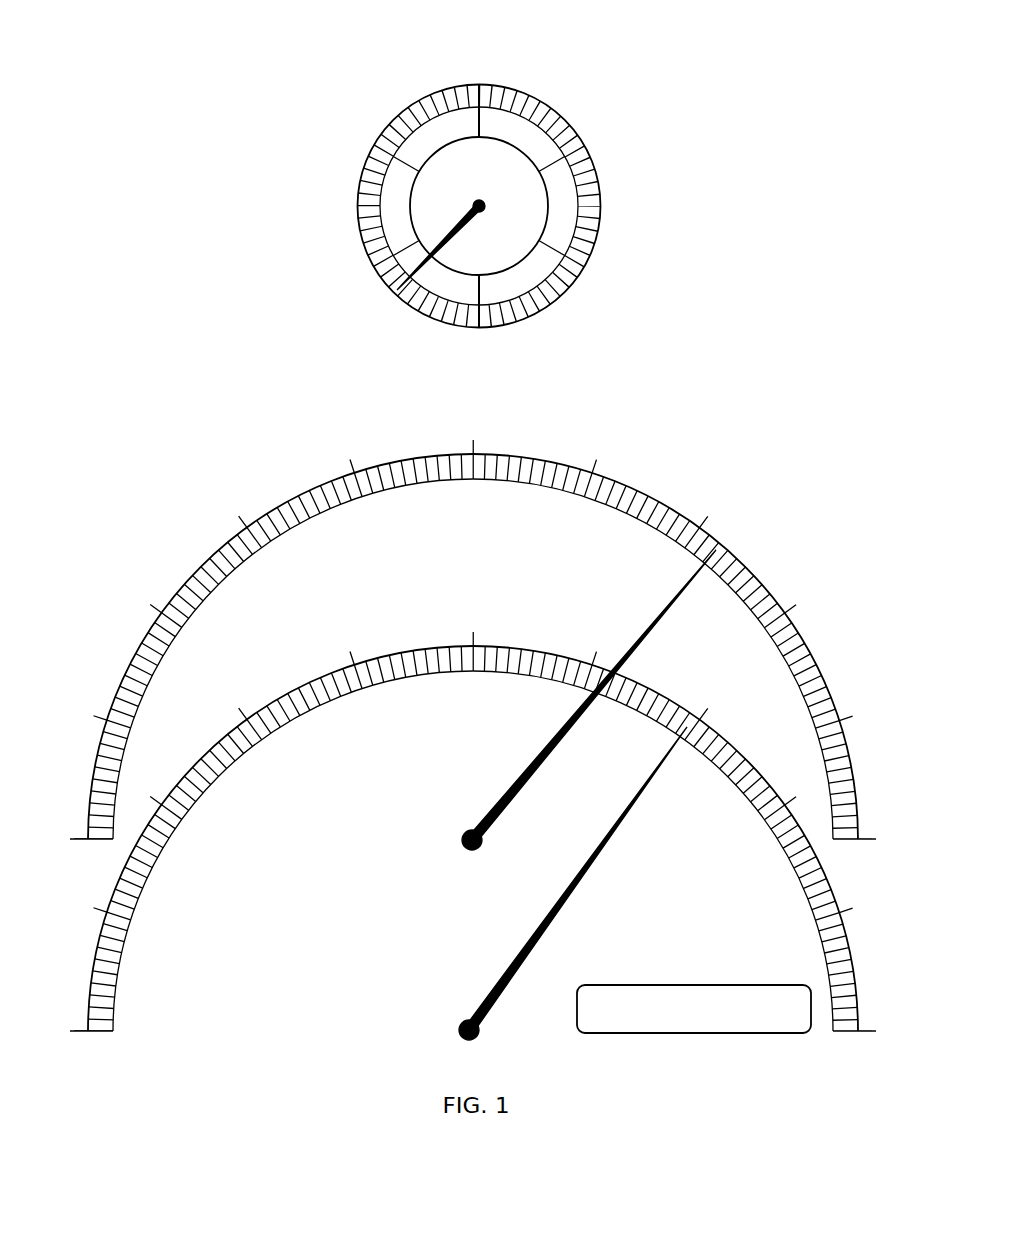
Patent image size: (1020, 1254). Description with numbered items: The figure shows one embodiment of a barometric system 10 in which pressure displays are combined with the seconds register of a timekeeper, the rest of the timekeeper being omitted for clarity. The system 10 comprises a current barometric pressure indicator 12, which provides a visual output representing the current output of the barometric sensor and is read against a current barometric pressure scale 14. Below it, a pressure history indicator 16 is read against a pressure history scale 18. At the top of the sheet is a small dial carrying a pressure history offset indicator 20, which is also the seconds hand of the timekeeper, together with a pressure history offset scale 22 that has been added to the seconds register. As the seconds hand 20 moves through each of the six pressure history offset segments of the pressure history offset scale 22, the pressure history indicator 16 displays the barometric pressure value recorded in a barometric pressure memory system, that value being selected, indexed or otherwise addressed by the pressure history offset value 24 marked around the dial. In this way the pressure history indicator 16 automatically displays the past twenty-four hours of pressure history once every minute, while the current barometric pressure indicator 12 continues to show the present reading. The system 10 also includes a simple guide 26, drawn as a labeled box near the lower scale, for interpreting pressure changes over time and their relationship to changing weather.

The system 10 is at (332, 54).
The current barometric pressure indicator 12 is at (668, 613).
The current barometric pressure scale 14 is at (208, 553).
The pressure history indicator 16 is at (638, 797).
The pressure history scale 18 is at (328, 667).
The pressure history offset indicator 20 is at (466, 210).
The pressure history offset scale 22 is at (563, 232).
The pressure history offset value 24 is at (418, 134).
The guide 26 is at (787, 1034).